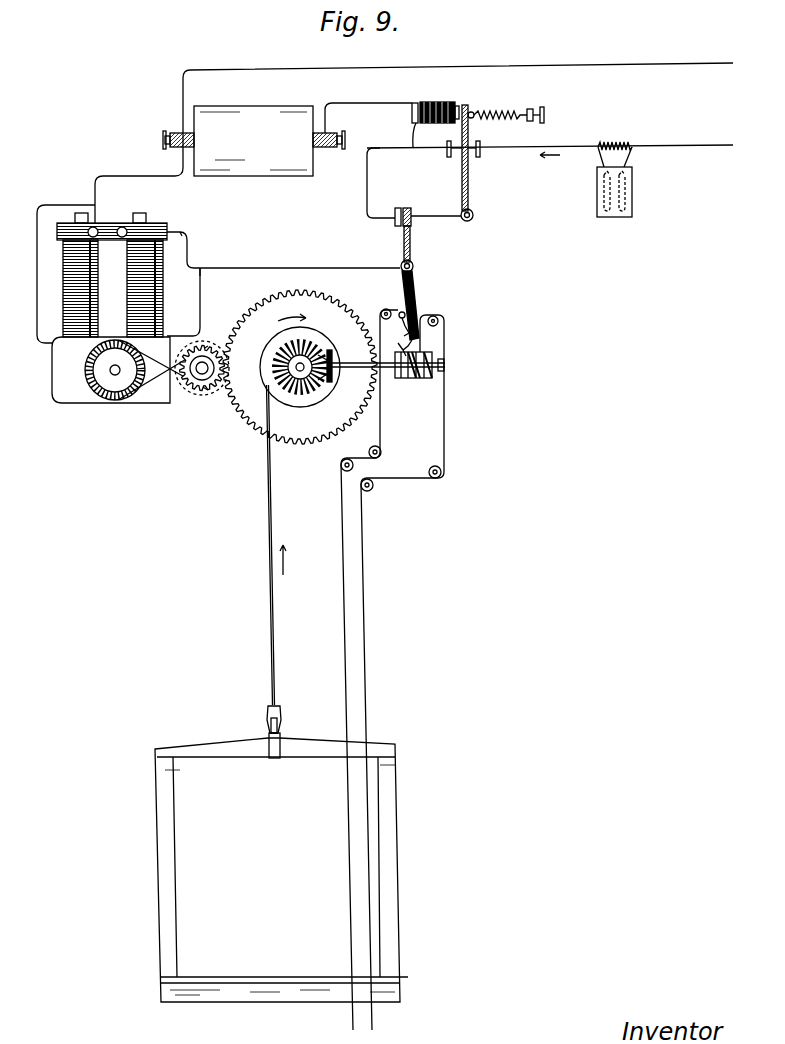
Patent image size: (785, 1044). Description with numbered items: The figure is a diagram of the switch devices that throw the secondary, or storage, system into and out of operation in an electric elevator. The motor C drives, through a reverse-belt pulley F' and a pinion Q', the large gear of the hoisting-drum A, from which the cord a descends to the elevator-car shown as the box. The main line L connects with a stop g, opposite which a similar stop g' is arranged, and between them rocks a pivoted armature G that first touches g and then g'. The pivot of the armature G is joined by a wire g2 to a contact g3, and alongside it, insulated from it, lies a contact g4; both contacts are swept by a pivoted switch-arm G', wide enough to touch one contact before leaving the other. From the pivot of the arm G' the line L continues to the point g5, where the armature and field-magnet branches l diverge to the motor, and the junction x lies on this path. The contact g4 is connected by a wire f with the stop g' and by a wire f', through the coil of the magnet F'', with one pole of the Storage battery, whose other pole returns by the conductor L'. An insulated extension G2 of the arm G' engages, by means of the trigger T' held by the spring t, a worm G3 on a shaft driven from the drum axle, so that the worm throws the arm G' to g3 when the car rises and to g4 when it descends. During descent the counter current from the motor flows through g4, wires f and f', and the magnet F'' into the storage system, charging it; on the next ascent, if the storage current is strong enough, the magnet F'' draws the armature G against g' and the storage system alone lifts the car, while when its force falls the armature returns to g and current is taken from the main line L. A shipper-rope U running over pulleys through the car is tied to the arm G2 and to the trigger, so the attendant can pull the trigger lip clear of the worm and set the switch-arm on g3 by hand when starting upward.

The conductor L' is at (414, 132).
The main line L is at (463, 196).
The storage battery Storage is at (254, 141).
The wire f' is at (375, 125).
The magnet F'' is at (435, 101).
The armature G is at (503, 158).
The wire f is at (396, 183).
The stop g' is at (450, 142).
The stop g is at (484, 143).
The contact g4 is at (391, 210).
The contact g3 is at (432, 210).
The wire g2 is at (458, 220).
The switch-arm G' is at (420, 249).
The extension-arm G2 is at (416, 294).
The spring t is at (401, 325).
The trigger T' is at (397, 347).
The worm G3 is at (400, 360).
The shipper-rope U is at (398, 669).
The hoisting-drum A is at (262, 353).
The hoisting cord a is at (274, 492).
The elevator-car box is at (281, 870).
The motor C is at (111, 308).
The armature and field-magnet branches l is at (117, 274).
The wire junction x is at (188, 233).
The point g5 is at (211, 278).
The reverse belt pulley F' is at (146, 370).
The pinion Q' is at (187, 368).